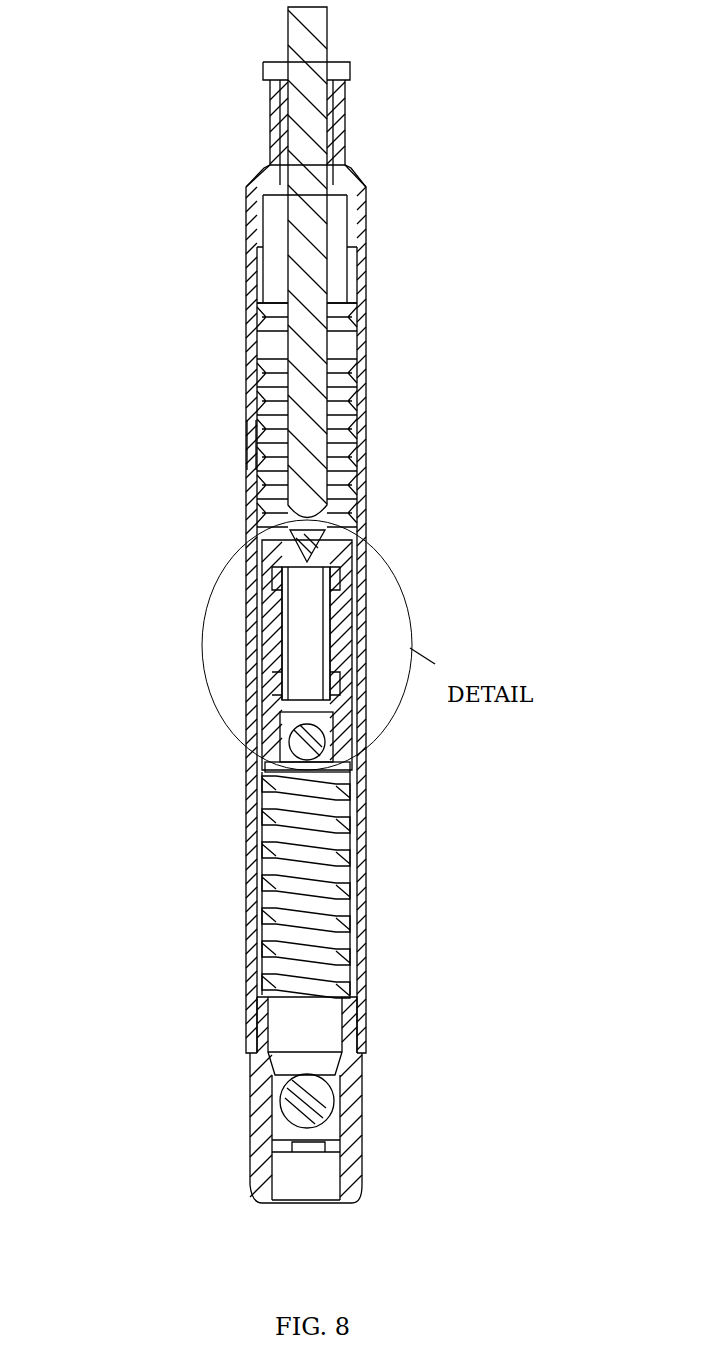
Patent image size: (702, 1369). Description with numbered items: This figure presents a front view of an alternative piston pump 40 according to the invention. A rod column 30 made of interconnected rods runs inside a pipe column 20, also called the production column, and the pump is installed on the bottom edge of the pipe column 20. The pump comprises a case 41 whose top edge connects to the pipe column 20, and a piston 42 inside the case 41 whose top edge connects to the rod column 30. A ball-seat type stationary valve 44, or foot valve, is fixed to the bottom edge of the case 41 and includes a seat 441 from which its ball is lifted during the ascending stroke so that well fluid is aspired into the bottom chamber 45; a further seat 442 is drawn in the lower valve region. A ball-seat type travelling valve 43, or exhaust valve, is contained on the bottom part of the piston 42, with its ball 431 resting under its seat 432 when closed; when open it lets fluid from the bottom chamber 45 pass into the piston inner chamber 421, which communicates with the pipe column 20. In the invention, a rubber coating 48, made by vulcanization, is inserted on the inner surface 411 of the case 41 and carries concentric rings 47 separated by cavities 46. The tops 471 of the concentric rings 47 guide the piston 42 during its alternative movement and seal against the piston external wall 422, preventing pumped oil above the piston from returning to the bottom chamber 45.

The pipe column 20 is at (272, 133).
The rod column 30 is at (306, 247).
The alternative piston pump 40 is at (128, 257).
The case 41 is at (255, 397).
The case inner surface 411 is at (253, 443).
The piston 42 is at (280, 612).
The inner chamber 421 is at (310, 623).
The piston external wall 422 is at (270, 652).
The travelling valve 43 is at (322, 722).
The ball 431 is at (310, 744).
The seat 432 is at (293, 762).
The stationary valve 44 is at (352, 1107).
The seat 441 is at (305, 1106).
The lower seat 442 is at (298, 1156).
The bottom chamber 45 is at (315, 880).
The cavities 46 is at (353, 420).
The concentric rings 47 is at (353, 480).
The concentric ring tops 471 is at (355, 346).
The coating 48 is at (263, 344).